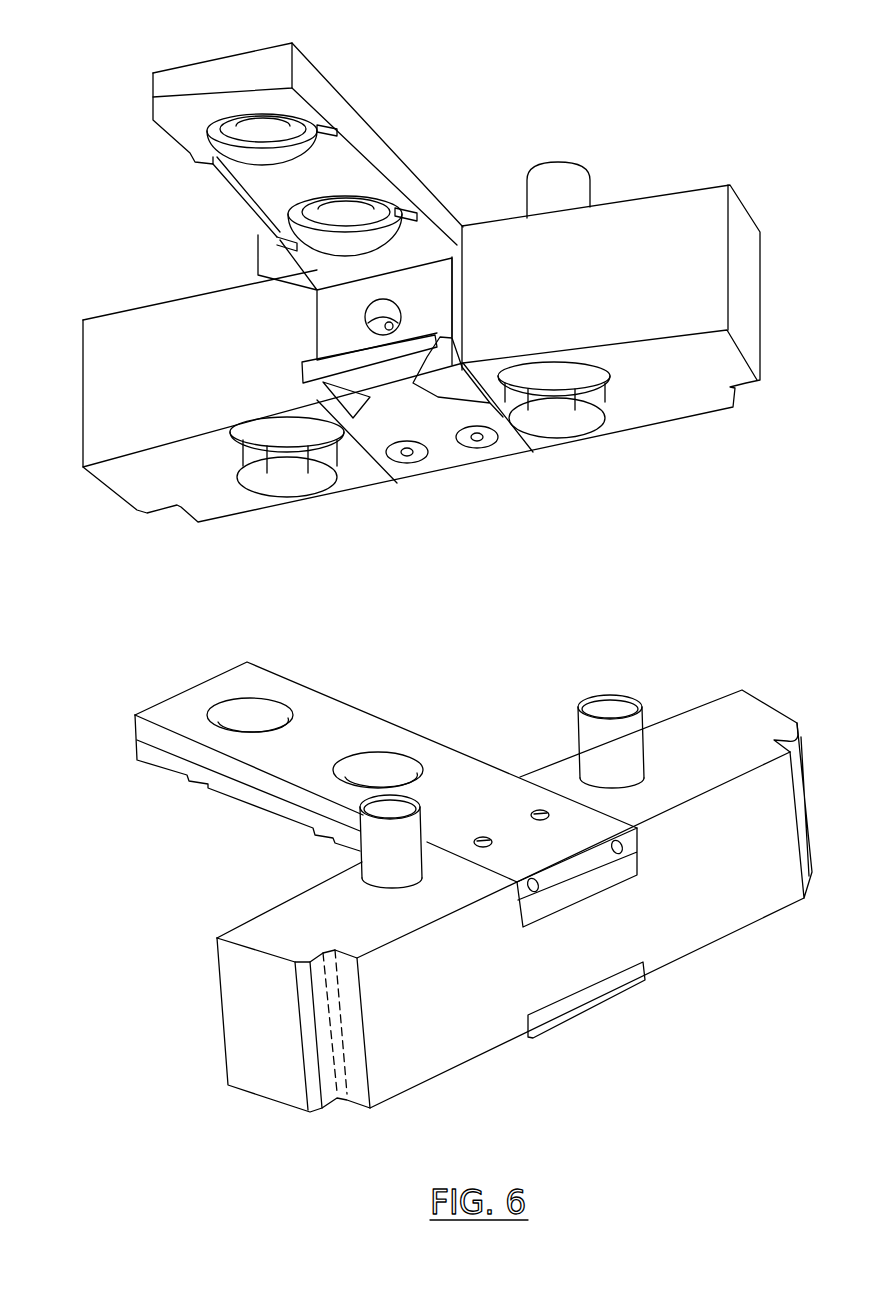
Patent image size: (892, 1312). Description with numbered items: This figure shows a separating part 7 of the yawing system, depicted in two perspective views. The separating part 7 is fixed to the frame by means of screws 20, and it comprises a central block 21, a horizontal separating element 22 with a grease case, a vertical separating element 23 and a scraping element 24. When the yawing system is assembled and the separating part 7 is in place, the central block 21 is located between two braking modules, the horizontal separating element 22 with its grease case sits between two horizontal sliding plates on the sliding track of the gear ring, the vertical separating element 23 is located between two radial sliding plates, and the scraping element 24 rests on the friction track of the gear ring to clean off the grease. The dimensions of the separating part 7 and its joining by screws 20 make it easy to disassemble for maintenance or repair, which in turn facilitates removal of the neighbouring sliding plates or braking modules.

The separating part 7 is at (533, 97).
The screws 20 is at (555, 423).
The central block 21 is at (623, 250).
The horizontal separating element 22 is at (385, 150).
The vertical separating element 23 is at (337, 328).
The scraping element 24 is at (433, 430).